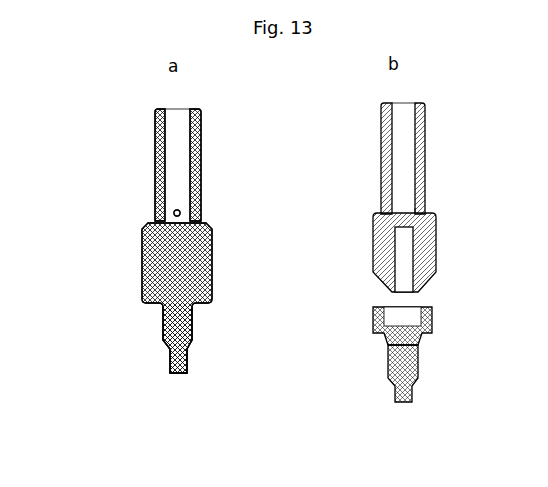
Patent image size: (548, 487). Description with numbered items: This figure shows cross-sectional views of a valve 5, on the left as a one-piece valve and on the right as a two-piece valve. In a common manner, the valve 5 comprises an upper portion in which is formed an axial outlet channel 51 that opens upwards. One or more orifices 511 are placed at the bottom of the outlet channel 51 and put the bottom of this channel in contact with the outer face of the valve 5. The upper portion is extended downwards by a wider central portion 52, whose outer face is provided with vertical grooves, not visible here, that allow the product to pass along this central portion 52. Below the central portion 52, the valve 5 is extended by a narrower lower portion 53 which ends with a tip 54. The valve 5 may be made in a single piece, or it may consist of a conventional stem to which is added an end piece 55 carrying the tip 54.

The valve 5 is at (122, 143).
The axial outlet channel 51 is at (180, 137).
The orifice 511 is at (181, 211).
The central portion 52 is at (170, 260).
The lower portion 53 is at (163, 325).
The tip 54 is at (173, 370).
The end piece 55 is at (382, 327).